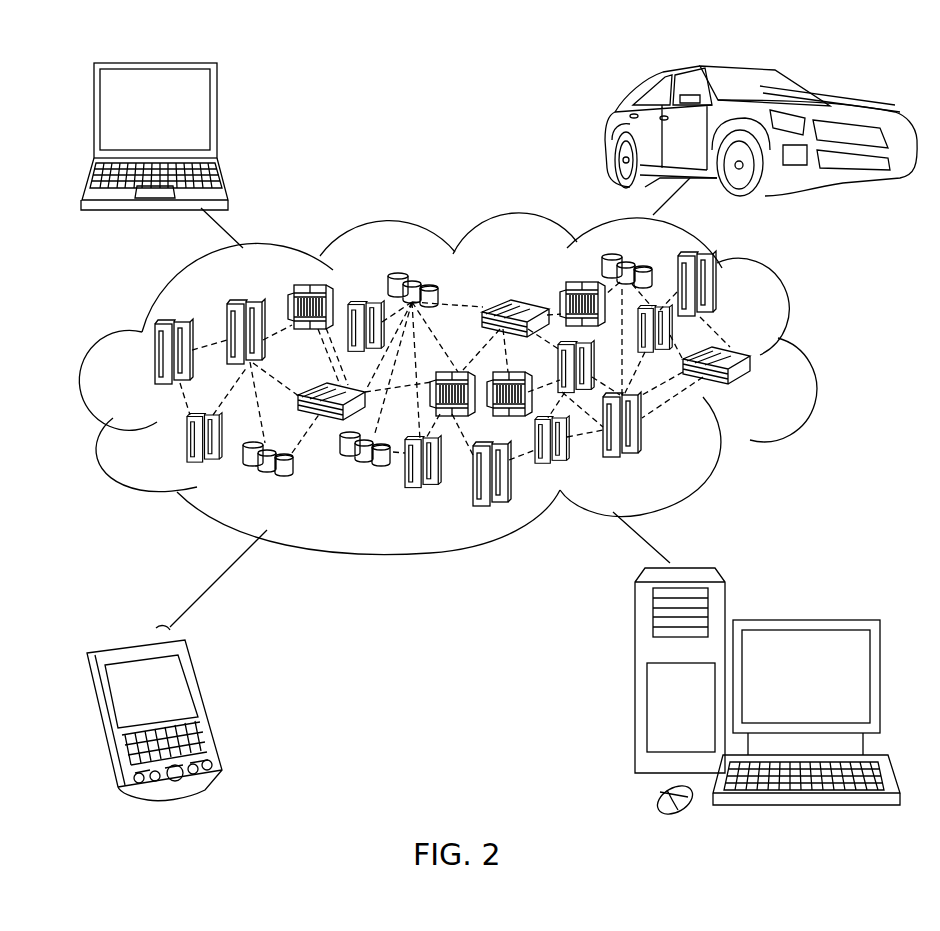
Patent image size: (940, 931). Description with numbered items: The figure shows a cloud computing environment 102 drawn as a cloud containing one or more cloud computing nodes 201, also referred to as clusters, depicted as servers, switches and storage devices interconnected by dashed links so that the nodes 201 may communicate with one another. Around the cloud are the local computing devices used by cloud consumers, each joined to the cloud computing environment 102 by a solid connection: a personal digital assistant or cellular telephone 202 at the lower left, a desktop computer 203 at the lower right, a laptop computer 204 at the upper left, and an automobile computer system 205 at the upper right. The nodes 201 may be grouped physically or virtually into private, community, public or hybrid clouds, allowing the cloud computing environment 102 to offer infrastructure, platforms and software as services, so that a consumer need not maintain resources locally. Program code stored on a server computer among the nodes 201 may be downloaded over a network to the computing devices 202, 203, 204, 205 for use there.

The cloud computing environment 102 is at (807, 362).
The cloud computing nodes 201 is at (753, 389).
The personal digital assistant (PDA) or cellular telephone 202 is at (208, 698).
The desktop computer 203 is at (802, 620).
The laptop computer 204 is at (217, 118).
The automobile computer system 205 is at (605, 135).